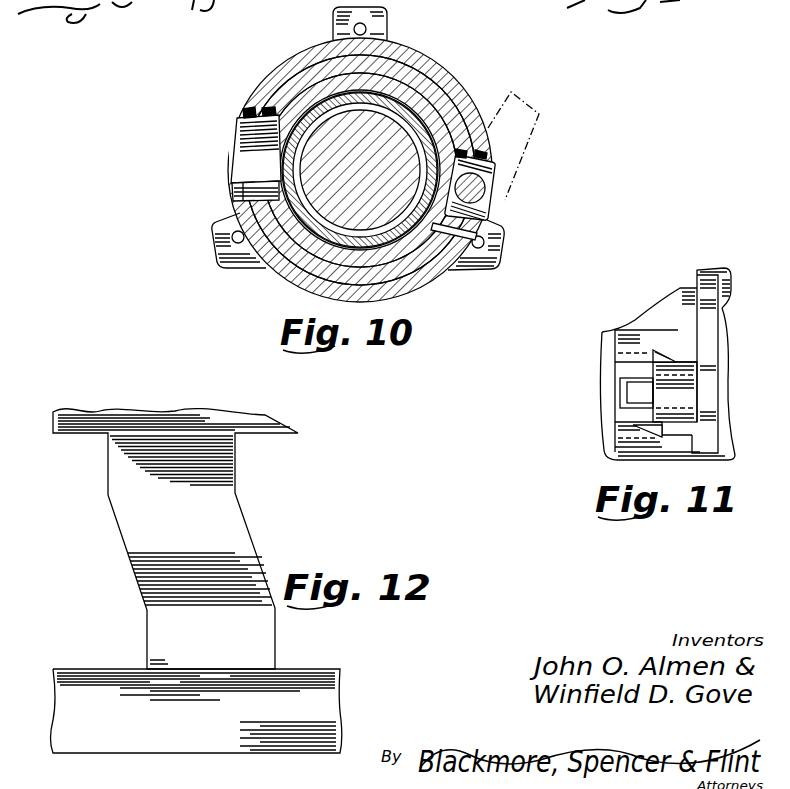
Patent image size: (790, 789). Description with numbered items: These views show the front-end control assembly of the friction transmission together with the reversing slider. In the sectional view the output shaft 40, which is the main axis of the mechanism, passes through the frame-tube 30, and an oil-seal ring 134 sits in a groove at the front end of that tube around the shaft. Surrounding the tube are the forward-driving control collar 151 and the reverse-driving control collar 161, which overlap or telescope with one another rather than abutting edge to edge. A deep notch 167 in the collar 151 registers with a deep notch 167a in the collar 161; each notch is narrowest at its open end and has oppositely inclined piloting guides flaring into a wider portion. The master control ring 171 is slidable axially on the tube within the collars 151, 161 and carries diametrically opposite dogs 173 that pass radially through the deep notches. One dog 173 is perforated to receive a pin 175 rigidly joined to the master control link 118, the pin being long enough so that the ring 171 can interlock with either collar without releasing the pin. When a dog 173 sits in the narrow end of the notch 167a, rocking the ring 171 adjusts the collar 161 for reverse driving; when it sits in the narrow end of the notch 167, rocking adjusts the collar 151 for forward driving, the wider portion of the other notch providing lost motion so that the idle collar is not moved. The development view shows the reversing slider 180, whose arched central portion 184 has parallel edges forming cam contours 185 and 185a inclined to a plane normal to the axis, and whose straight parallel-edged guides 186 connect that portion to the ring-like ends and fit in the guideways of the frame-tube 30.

In FIG. 10, the shaft 30 is at (307, 220).
In FIG. 10, the output shaft 40 is at (310, 157).
In FIG. 10, the master control link 118 is at (512, 115).
In FIG. 11, the master control link 118 is at (722, 290).
In FIG. 10, the oil-seal ring 134 is at (410, 130).
In FIG. 10, the forward-driving control collar 151 is at (418, 50).
In FIG. 11, the forward-driving control collar 151 is at (633, 337).
In FIG. 10, the reverse-driving control collar 161 is at (307, 77).
In FIG. 11, the reverse-driving control collar 161 is at (678, 428).
In FIG. 10, the deep notch 167 is at (250, 110).
In FIG. 11, the deep notch 167 is at (665, 350).
In FIG. 10, the deep notch 167a is at (268, 108).
In FIG. 11, the deep notch 167a is at (673, 362).
In FIG. 10, the master control ring 171 is at (410, 92).
In FIG. 10, the dog 173 is at (247, 127).
In FIG. 11, the dog 173 is at (678, 390).
In FIG. 10, the pin 175 is at (490, 185).
In FIG. 11, the pin 175 is at (633, 393).
In FIG. 12, the reversing slider 180 is at (298, 692).
In FIG. 12, the arched central portion 184 is at (243, 572).
In FIG. 12, the cam contour 185 is at (123, 545).
In FIG. 12, the cam contour 185a is at (243, 520).
In FIG. 10, the guide 186 is at (282, 190).
In FIG. 12, the guide 186 is at (89, 407).